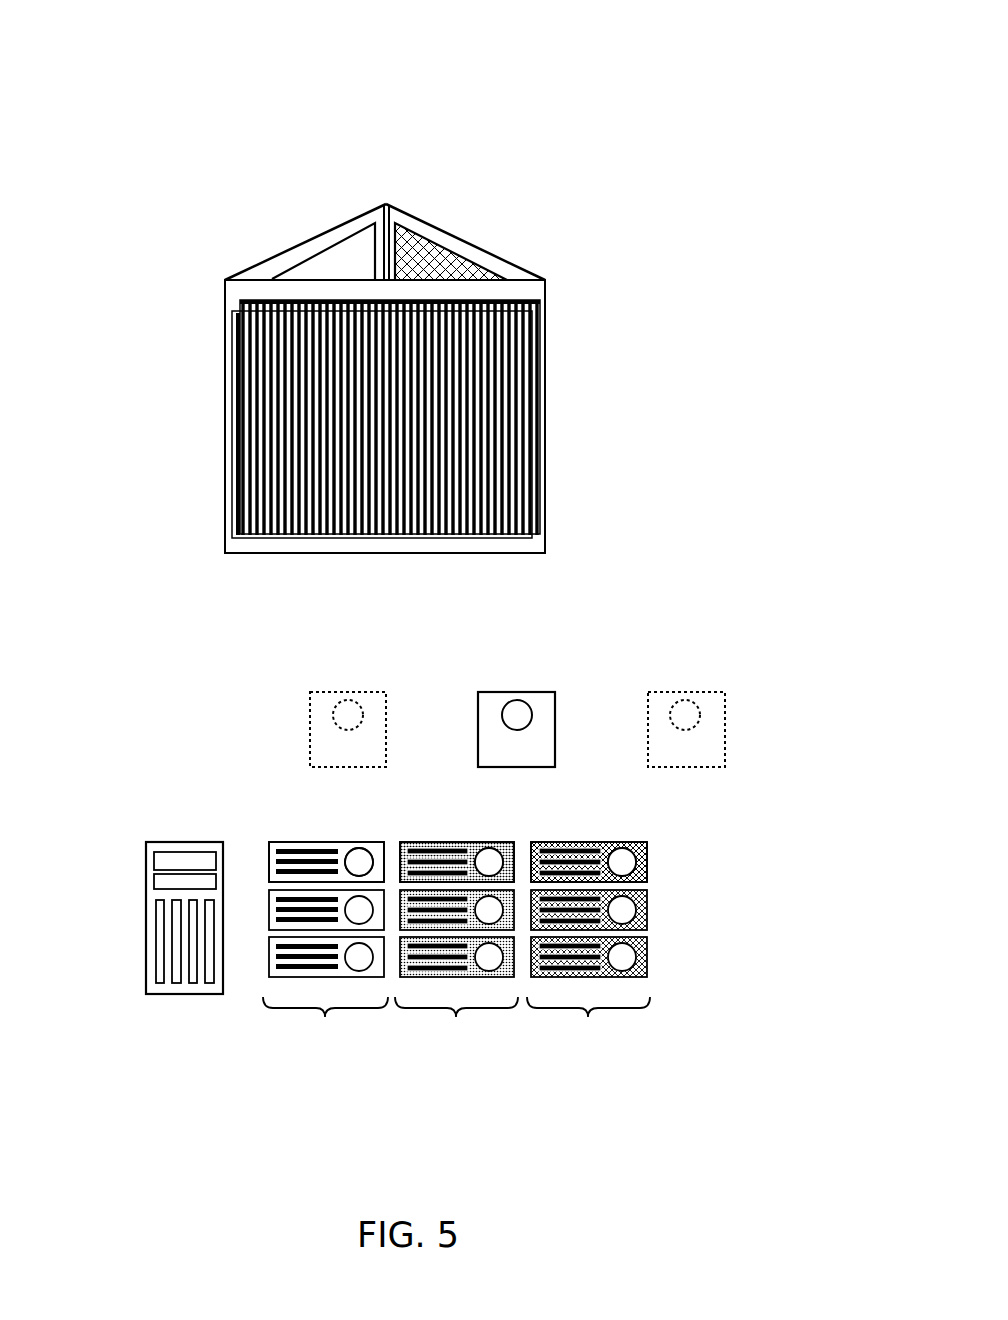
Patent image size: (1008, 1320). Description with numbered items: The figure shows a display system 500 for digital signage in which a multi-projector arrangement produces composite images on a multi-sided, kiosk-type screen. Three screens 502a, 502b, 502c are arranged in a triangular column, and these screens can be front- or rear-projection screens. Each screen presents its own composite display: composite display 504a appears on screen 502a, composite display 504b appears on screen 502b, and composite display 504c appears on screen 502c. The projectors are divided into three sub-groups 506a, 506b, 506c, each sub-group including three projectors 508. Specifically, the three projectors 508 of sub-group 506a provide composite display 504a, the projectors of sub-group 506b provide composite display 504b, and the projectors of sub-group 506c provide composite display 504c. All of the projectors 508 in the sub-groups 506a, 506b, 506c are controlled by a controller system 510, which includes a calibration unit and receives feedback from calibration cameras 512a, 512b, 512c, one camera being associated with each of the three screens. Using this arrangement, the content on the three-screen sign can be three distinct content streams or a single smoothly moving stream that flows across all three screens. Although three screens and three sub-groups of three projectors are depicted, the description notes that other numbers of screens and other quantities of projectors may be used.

The display system 500 is at (214, 80).
The screen 502a is at (272, 268).
The screen 502b is at (312, 545).
The screen 502c is at (485, 258).
The composite display 504a is at (332, 241).
The composite display 504b is at (547, 479).
The composite display 504c is at (433, 238).
The sub-group 506a is at (325, 952).
The sub-group 506b is at (456, 951).
The sub-group 506c is at (588, 949).
The projector 508 is at (330, 845).
The controller system 510 is at (178, 848).
The calibration camera 512a is at (376, 713).
The calibration camera 512b is at (540, 715).
The calibration camera 512c is at (712, 716).